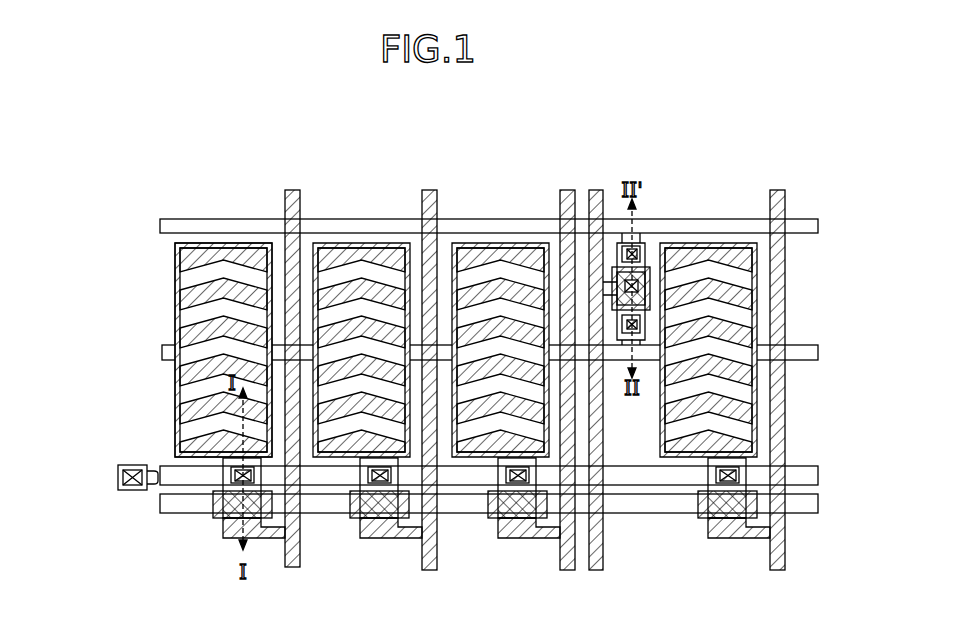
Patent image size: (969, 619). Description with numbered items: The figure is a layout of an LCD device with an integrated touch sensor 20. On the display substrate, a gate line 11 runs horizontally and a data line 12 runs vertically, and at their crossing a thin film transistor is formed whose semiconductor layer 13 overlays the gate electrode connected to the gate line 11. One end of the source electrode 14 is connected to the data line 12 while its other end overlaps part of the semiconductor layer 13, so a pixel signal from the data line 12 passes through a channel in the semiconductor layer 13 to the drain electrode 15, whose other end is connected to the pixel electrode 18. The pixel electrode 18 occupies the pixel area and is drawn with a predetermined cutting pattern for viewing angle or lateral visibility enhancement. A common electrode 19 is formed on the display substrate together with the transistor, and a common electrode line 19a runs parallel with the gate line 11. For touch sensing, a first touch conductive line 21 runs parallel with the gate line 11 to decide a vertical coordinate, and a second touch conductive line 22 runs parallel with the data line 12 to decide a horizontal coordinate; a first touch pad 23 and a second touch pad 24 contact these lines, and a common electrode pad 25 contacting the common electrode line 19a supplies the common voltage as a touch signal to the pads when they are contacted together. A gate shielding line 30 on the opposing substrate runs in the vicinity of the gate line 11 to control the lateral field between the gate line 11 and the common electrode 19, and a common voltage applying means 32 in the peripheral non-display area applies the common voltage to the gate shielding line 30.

The gate line 11 is at (320, 513).
The data line 12 is at (293, 568).
The semiconductor layer 13 is at (217, 523).
The source electrode 14 is at (258, 540).
The drain electrode 15 is at (228, 481).
The pixel electrode 18 is at (178, 447).
The common electrode 19 is at (177, 398).
The common electrode line 19a is at (162, 352).
The touch sensor 20 is at (639, 228).
The first touch conductive line 21 is at (487, 219).
The second touch conductive line 22 is at (595, 190).
The first touch pad 23 is at (640, 247).
The second touch pad 24 is at (652, 280).
The common electrode pad 25 is at (643, 322).
The gate shielding line 30 is at (330, 485).
The common voltage applying means 32 is at (134, 492).